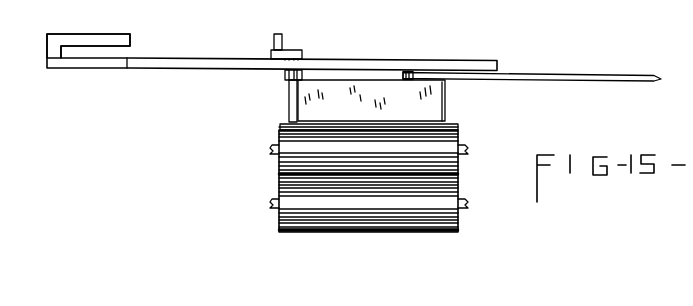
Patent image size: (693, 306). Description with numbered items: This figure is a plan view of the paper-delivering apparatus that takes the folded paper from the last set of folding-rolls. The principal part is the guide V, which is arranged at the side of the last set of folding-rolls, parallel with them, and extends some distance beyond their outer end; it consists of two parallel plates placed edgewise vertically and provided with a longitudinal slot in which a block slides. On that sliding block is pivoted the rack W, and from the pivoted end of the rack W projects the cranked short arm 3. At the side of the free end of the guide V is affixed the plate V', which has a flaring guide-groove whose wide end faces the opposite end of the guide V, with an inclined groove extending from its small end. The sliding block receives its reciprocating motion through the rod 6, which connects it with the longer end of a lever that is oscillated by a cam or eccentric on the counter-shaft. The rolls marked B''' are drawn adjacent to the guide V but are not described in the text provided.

The guide V is at (272, 52).
The plate V' is at (88, 36).
The cranked short arm 3 is at (286, 78).
The rack W is at (371, 100).
The rod 6 is at (532, 69).
The slotted block B''' is at (369, 178).